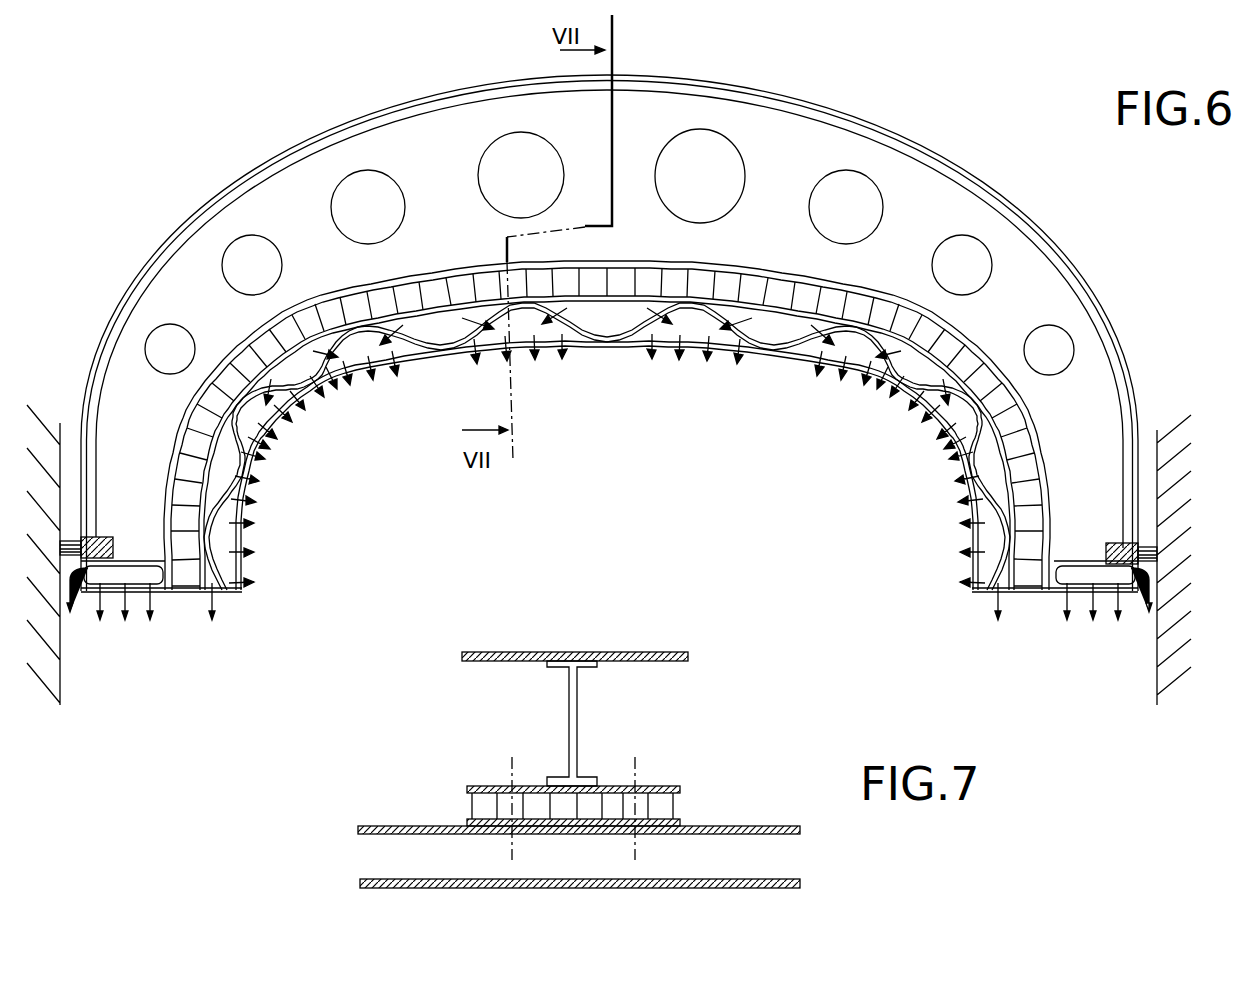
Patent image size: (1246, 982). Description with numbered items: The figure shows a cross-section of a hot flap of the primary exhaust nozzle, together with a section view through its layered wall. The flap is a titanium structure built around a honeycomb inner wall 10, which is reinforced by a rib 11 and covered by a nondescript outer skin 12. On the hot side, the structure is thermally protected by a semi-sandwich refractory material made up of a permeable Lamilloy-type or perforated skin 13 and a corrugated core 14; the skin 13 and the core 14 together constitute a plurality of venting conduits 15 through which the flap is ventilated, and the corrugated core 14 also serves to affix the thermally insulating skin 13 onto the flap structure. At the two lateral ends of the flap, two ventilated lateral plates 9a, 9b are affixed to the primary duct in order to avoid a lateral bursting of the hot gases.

In FIG. 6, the ventilated lateral plate 9a is at (95, 538).
In FIG. 6, the ventilated lateral plate 9b is at (1153, 557).
In FIG. 6, the honeycomb inner wall 10 is at (320, 308).
In FIG. 7, the honeycomb inner wall 10 is at (485, 805).
In FIG. 6, the rib 11 is at (791, 139).
In FIG. 7, the rib 11 is at (588, 705).
In FIG. 6, the outer skin 12 is at (333, 117).
In FIG. 7, the outer skin 12 is at (497, 652).
In FIG. 6, the permeable skin 13 is at (320, 418).
In FIG. 7, the permeable skin 13 is at (398, 882).
In FIG. 6, the corrugated core 14 is at (690, 312).
In FIG. 6, the venting conduit 15 is at (520, 330).
In FIG. 7, the venting conduit 15 is at (702, 838).